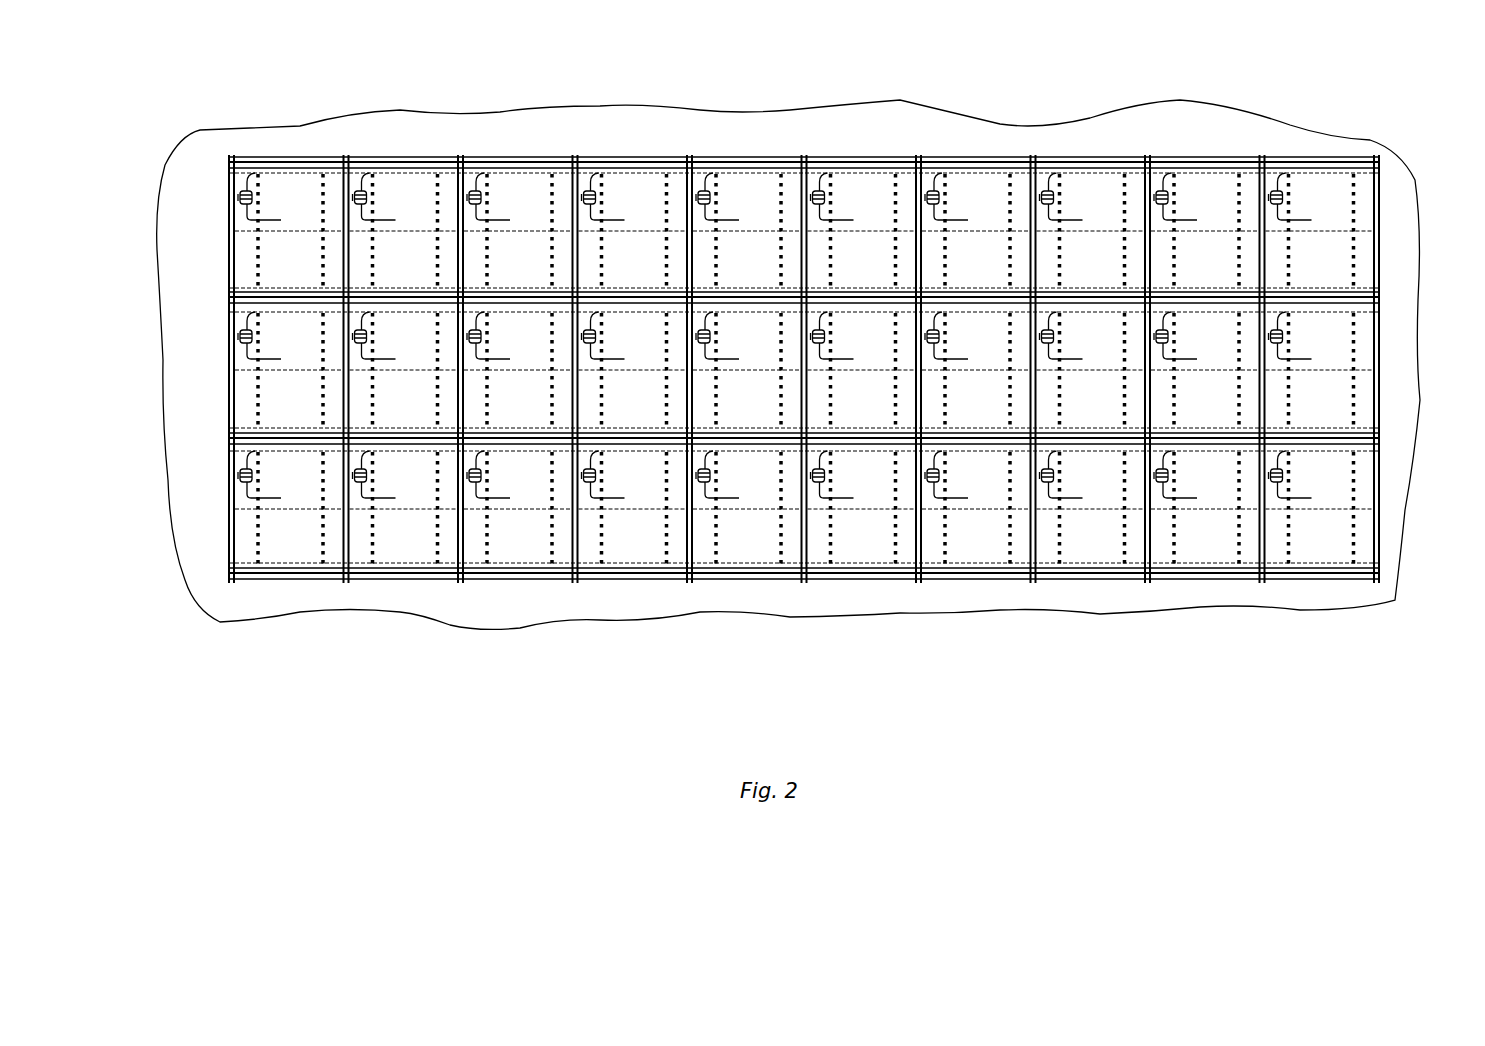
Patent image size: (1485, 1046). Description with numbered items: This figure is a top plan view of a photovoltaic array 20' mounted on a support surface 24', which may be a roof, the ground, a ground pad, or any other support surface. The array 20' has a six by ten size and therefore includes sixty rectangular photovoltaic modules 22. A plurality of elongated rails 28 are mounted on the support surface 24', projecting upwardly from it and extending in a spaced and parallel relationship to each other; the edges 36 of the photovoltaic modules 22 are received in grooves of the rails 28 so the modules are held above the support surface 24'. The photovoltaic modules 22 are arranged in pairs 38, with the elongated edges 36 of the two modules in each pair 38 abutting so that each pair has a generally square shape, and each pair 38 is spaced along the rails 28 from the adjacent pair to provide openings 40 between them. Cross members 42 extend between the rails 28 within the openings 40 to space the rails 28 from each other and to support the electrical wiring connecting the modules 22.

The photovoltaic array 20' is at (855, 380).
The support surface 24' is at (788, 331).
The photovoltaic module 22 is at (398, 192).
The elongated rail 28 is at (236, 553).
The edge 36 is at (858, 379).
The pair 38 is at (778, 368).
The opening 40 is at (1378, 293).
The cross member 42 is at (510, 297).